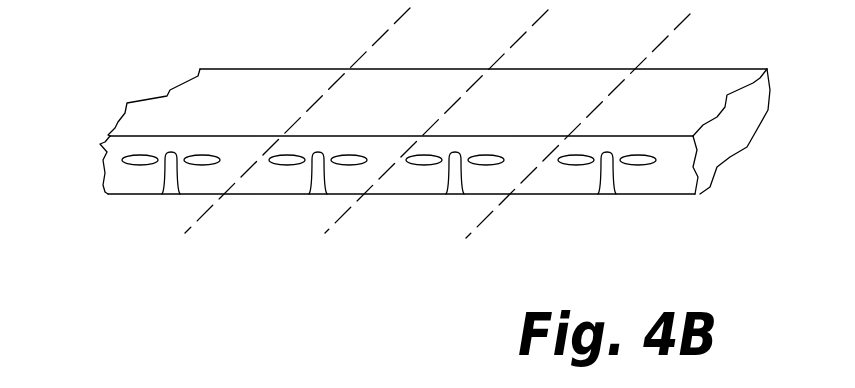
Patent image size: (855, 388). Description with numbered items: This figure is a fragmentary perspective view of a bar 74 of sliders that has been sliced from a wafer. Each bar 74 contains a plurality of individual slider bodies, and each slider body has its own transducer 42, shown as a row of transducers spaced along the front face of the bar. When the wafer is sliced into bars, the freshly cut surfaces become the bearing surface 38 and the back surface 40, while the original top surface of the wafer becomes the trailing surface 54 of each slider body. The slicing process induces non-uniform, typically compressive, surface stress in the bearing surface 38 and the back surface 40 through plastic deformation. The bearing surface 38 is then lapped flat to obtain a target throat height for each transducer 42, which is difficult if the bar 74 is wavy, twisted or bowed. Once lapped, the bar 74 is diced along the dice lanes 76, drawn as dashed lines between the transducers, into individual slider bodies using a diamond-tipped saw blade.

The bearing surface 38 is at (117, 197).
The back surface 40 is at (232, 83).
The transducer 42 is at (168, 197).
The trailing surface 54 is at (106, 153).
The bar 74 is at (744, 51).
The dice lanes 76 is at (378, 33).